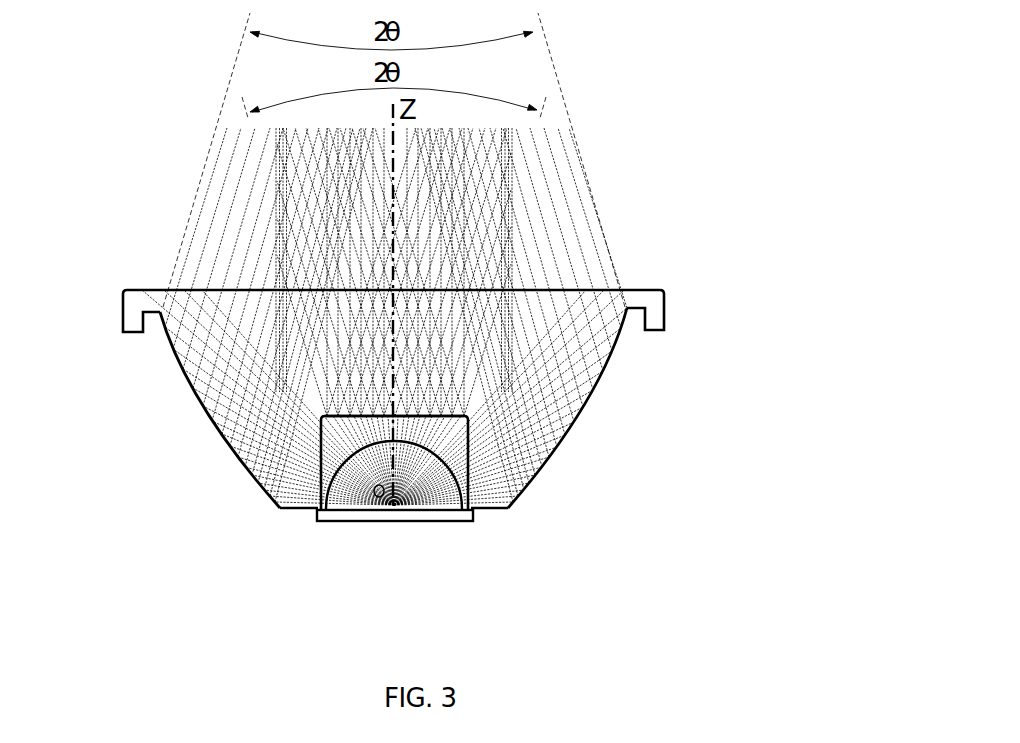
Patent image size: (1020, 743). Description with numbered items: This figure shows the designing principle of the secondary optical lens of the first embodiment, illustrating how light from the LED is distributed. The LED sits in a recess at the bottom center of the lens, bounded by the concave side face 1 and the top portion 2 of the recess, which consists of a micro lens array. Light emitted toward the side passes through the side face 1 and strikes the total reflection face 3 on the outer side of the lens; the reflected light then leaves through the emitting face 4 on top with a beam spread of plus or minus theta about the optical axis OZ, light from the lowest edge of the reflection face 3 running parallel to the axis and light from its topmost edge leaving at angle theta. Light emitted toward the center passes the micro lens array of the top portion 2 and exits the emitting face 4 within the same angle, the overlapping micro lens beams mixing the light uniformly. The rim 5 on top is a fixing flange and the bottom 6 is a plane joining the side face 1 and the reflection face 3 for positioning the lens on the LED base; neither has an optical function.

The side face of the recess 1 is at (320, 440).
The top portion of the recess 2 is at (333, 414).
The total reflection face 3 is at (588, 397).
The emitting face 4 is at (497, 288).
The rim 5 is at (648, 302).
The bottom of the lens 6 is at (492, 508).
The LED light source LED is at (397, 503).